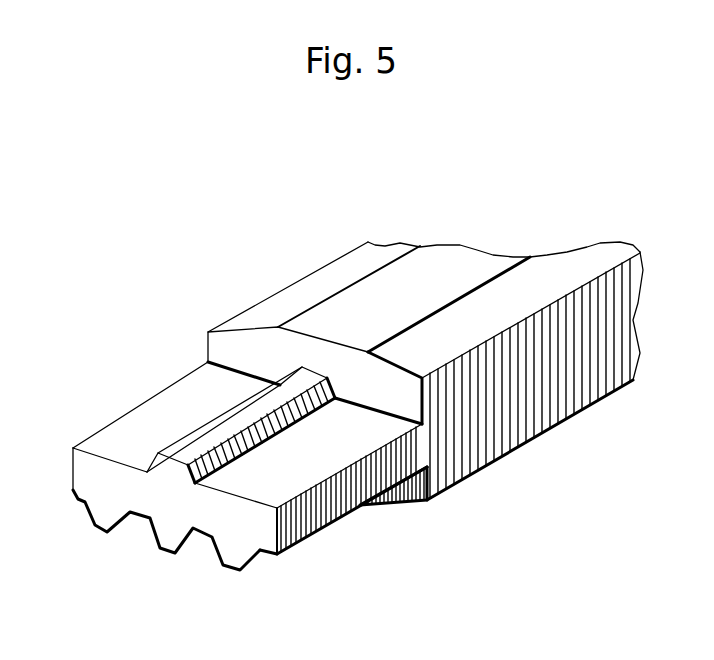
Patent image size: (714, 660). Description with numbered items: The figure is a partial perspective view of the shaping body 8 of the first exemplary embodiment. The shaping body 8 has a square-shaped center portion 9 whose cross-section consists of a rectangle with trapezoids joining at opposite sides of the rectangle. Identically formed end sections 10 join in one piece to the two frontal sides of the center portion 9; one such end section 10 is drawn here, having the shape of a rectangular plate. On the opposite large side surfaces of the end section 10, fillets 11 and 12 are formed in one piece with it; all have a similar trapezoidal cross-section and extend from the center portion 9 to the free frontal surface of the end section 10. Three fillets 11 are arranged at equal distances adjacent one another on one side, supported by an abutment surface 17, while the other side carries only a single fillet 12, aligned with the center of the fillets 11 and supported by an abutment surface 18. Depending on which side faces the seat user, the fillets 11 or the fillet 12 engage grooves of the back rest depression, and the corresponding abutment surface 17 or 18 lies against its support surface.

The shaping body 8 is at (312, 540).
The center portion 9 is at (406, 285).
The end section 10 is at (160, 383).
The fillets 11 is at (170, 528).
The fillet 12 is at (243, 415).
The abutment surface 17 is at (265, 556).
The abutment surface 18 is at (270, 463).